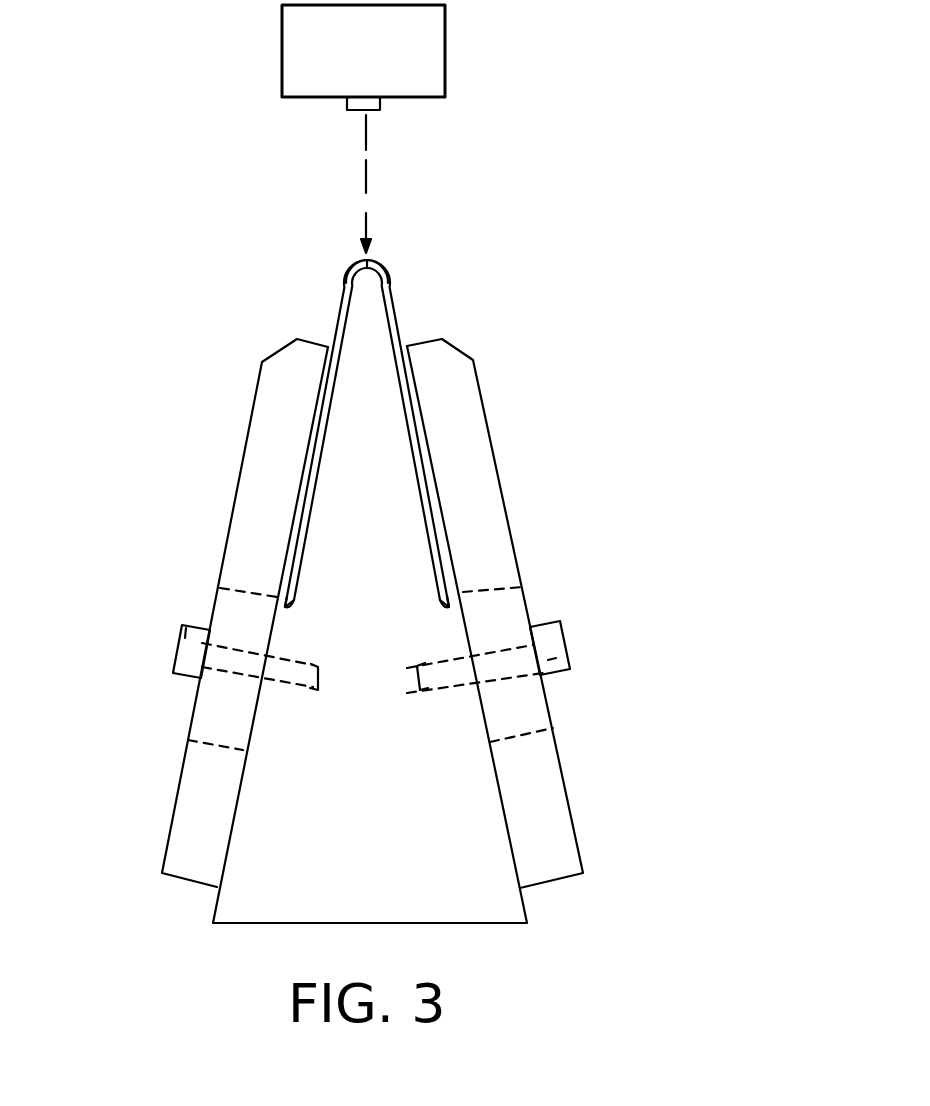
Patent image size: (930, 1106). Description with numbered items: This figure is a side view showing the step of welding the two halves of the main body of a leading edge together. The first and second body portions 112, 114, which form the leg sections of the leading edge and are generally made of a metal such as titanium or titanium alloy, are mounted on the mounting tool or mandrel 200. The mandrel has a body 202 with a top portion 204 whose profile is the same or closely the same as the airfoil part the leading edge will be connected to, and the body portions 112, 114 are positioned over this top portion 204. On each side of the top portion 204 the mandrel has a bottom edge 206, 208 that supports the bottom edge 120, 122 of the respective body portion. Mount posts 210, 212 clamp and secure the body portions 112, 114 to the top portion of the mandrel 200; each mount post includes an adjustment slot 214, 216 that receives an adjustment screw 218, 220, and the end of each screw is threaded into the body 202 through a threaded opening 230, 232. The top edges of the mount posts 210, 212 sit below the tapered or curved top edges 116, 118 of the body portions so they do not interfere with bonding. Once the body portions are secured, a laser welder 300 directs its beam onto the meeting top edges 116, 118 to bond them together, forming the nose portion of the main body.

The laser welder 300 is at (447, 45).
The mounting tool or mandrel 200 is at (268, 798).
The body 202 is at (463, 810).
The top portion 204 is at (385, 418).
The bottom edge 206 is at (462, 597).
The bottom edge 208 is at (287, 600).
The mount post 210 is at (482, 433).
The mount post 212 is at (252, 430).
The adjustment slot 214 is at (537, 712).
The adjustment slot 216 is at (208, 708).
The adjustment screw 218 is at (560, 642).
The adjustment screw 220 is at (185, 642).
The threaded opening 230 is at (430, 690).
The threaded opening 232 is at (302, 695).
The first body portion 112 is at (397, 315).
The second body portion 114 is at (338, 308).
The top edge 116 is at (378, 259).
The top edge 118 is at (357, 261).
The bottom edge 120 is at (452, 607).
The bottom edge 122 is at (284, 608).